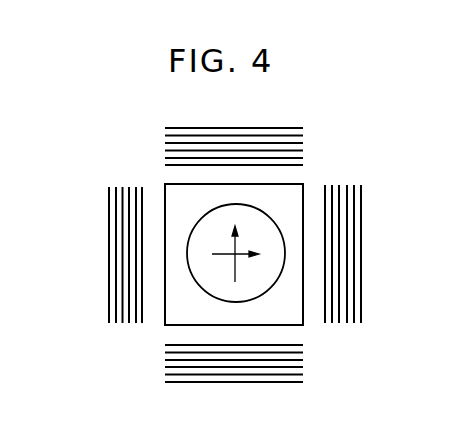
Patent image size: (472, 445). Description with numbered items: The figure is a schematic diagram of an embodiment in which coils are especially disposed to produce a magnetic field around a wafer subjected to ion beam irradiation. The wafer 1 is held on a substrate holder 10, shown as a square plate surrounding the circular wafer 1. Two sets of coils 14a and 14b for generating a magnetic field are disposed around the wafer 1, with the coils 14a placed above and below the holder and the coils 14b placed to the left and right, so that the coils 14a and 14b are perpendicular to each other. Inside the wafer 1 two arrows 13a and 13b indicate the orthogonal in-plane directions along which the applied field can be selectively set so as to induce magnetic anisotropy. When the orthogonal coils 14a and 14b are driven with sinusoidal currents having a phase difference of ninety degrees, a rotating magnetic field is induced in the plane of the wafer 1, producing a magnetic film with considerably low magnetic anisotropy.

The wafer 1 is at (198, 264).
The substrate holder 10 is at (176, 317).
The first direction 13a is at (240, 242).
The second direction 13b is at (248, 266).
The coil 14a is at (288, 127).
The coil 14b is at (108, 221).